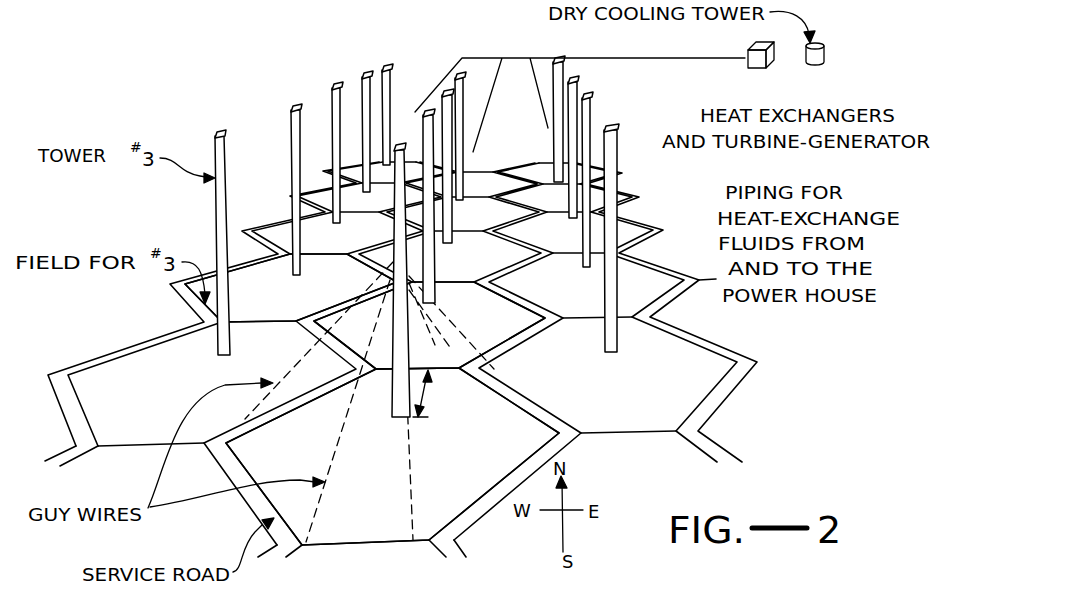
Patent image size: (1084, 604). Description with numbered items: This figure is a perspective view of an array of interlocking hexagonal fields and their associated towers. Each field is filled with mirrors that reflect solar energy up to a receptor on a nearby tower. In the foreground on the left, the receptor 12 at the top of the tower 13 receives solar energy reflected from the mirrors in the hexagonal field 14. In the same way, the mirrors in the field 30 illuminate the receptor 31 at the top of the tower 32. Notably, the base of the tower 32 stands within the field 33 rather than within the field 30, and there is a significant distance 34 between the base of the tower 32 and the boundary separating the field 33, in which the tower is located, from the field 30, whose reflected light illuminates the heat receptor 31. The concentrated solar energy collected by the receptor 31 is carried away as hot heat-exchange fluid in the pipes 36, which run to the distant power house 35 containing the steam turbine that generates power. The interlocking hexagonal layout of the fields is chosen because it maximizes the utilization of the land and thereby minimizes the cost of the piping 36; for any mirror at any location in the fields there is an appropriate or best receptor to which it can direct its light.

The receptor 12 is at (212, 128).
The tower 13 is at (206, 220).
The hexagonal field 14 is at (282, 309).
The field 30 is at (495, 326).
The receptor 31 is at (400, 142).
The tower 32 is at (390, 487).
The field 33 is at (467, 469).
The distance 34 is at (426, 398).
The power house 35 is at (741, 66).
The pipes 36 is at (626, 66).